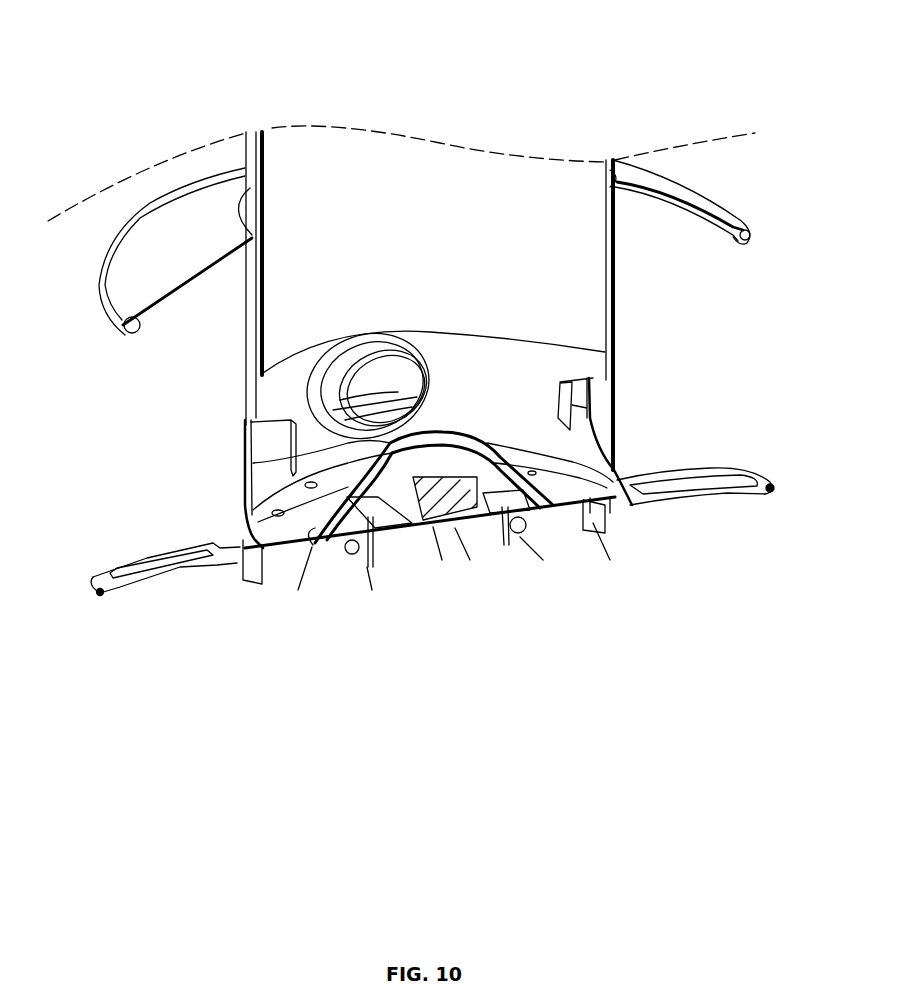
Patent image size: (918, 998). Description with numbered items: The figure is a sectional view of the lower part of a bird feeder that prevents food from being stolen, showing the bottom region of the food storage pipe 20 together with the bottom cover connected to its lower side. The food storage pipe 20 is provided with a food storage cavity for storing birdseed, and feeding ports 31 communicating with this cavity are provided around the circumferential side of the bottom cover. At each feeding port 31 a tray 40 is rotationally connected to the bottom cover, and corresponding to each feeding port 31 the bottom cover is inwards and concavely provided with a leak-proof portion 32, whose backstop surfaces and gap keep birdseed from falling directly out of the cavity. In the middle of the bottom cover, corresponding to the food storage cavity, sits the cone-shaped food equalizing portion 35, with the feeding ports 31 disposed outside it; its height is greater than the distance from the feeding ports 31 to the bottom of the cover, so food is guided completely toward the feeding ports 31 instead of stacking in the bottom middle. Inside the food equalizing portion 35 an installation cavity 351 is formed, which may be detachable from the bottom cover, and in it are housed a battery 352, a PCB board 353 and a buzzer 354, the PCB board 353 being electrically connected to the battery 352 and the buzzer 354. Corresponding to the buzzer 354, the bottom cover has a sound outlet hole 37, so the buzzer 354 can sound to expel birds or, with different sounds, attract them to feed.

The food storage pipe 20 is at (353, 168).
The feeding port 31 is at (245, 478).
The leak-proof portion 32 is at (612, 377).
The food equalizing portion 35 is at (315, 547).
The installation cavity 351 is at (592, 503).
The battery 352 is at (367, 563).
The PCB board 353 is at (527, 540).
The buzzer 354 is at (457, 540).
The sound outlet hole 37 is at (437, 540).
The tray 40 is at (183, 565).